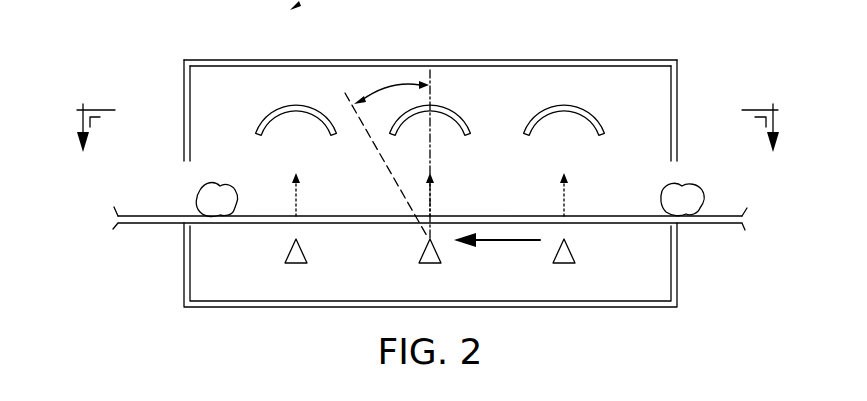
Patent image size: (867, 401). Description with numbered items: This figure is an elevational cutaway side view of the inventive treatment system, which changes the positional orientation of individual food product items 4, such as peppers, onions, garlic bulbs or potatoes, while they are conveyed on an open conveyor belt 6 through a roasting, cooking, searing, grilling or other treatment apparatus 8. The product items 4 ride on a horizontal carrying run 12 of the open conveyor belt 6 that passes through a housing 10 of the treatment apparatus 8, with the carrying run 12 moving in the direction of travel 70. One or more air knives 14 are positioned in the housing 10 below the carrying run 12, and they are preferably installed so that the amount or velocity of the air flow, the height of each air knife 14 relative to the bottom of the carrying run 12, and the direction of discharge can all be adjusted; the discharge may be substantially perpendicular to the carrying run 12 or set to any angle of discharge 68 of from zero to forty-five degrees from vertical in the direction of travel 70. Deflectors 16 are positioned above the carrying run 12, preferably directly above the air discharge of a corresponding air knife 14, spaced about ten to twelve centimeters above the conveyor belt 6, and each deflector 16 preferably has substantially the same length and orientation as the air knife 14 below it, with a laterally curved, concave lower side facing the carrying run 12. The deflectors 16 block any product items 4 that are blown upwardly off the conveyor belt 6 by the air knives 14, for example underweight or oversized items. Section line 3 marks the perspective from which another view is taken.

The section line 3- 3 is at (428, 145).
The food product items 4 is at (213, 184).
The open conveyor belt 6 is at (145, 215).
The treatment apparatus 8 is at (430, 82).
The housing 10 is at (591, 59).
The horizontal carrying run 12 is at (430, 190).
The air knives 14 is at (287, 254).
The deflectors 16 is at (298, 106).
The angle of discharge 68 is at (390, 89).
The direction of travel 70 is at (509, 242).